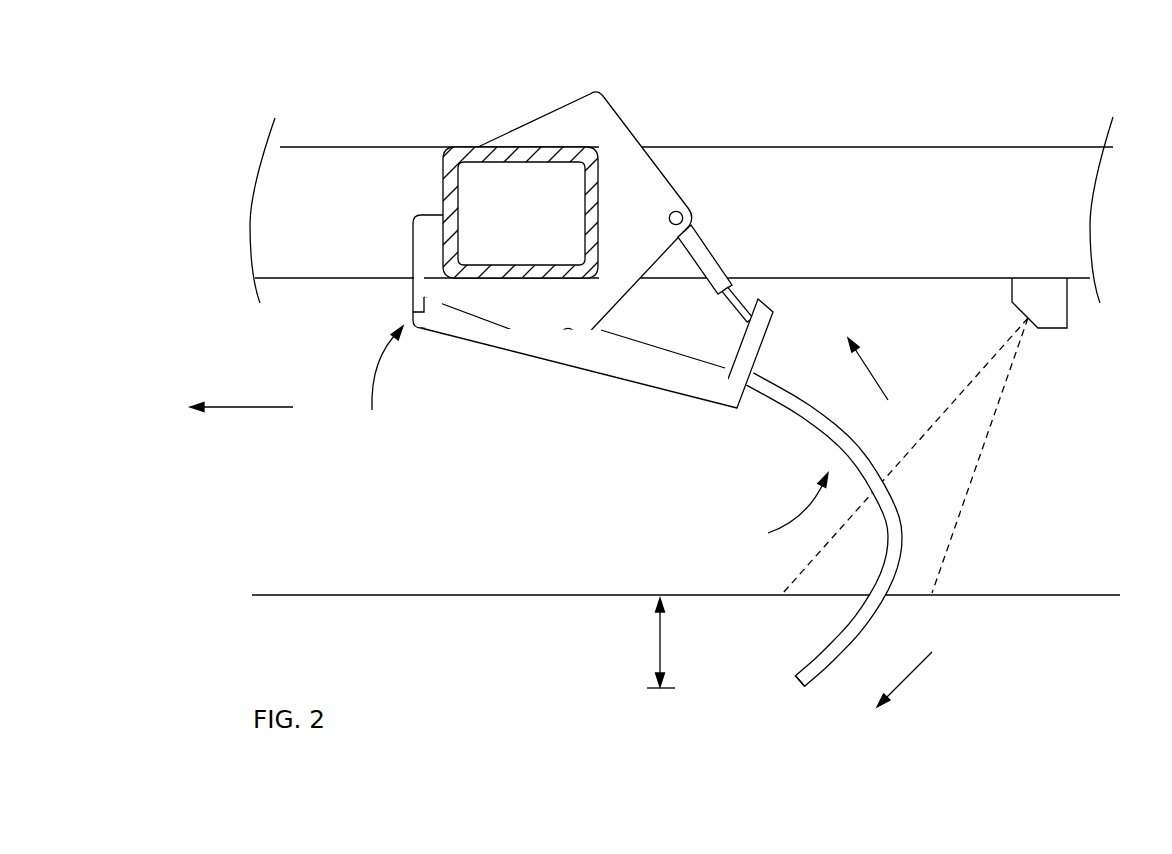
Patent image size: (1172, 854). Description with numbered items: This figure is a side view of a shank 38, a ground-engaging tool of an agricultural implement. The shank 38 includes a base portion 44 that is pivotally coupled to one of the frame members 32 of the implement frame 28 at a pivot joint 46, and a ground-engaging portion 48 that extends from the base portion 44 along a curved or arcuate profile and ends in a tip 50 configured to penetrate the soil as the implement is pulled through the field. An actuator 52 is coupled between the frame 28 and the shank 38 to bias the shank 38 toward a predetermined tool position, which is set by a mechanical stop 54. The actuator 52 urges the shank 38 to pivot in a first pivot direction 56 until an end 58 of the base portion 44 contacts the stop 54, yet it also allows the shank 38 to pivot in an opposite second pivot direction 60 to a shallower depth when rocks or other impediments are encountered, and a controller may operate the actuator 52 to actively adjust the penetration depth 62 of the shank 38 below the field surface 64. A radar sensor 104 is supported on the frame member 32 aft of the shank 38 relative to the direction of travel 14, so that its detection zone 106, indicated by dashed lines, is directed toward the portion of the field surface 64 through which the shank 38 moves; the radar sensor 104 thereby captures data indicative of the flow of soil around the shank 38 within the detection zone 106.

The direction of travel 14 is at (247, 408).
The implement frame 28 is at (345, 105).
The frame member 32 is at (477, 148).
The shank 38 is at (780, 511).
The base portion 44 is at (633, 383).
The pivot joint 46 is at (562, 338).
The ground-engaging portion 48 is at (798, 413).
The tip 50 is at (795, 678).
The actuator 52 is at (710, 248).
The mechanical stop 54 is at (413, 297).
The first pivot direction 56 is at (905, 678).
The end of the base portion 58 is at (382, 381).
The second pivot direction 60 is at (868, 378).
The penetration depth 62 is at (660, 638).
The field surface 64 is at (357, 593).
The radar sensor 104 is at (1048, 333).
The detection zone 106 is at (929, 427).